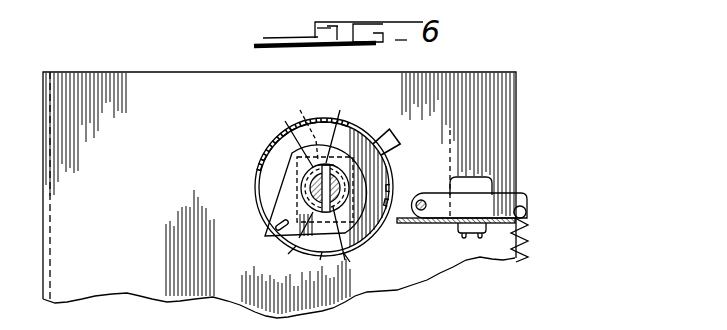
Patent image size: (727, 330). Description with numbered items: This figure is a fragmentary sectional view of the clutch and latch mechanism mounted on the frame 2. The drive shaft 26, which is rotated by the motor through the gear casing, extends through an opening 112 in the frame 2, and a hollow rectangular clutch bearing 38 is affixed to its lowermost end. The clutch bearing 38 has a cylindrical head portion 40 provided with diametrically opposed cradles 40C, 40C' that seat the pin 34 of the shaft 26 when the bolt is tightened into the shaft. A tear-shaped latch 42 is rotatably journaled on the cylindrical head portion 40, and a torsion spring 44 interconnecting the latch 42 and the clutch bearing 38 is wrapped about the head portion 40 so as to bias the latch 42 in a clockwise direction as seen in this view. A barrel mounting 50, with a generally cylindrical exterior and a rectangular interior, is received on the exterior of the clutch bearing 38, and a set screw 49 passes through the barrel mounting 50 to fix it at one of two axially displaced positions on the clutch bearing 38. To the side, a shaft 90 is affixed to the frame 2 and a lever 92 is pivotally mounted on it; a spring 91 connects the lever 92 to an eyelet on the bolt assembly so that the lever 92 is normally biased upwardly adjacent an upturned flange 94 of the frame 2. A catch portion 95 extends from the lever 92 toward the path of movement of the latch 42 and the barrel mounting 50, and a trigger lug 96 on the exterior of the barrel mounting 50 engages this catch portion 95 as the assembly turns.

The frame 2 is at (97, 88).
The barrel mounting 50 is at (273, 165).
The tear-shaped latch 42 is at (274, 201).
The opening 112 is at (274, 253).
The pin 34 is at (333, 167).
The cylindrical head portion 40 is at (302, 184).
The cradle 40C' is at (333, 165).
The clutch bearing 38 is at (304, 126).
The cradle 40C is at (315, 266).
The drive shaft 26 is at (357, 263).
The torsion spring 44 is at (280, 259).
The trigger lug 96 is at (395, 140).
The set screw 49 is at (393, 190).
The catch portion 95 is at (398, 223).
The shaft 90 is at (423, 202).
The lever 92 is at (466, 192).
The upturned flange 94 is at (463, 236).
The spring 91 is at (527, 247).